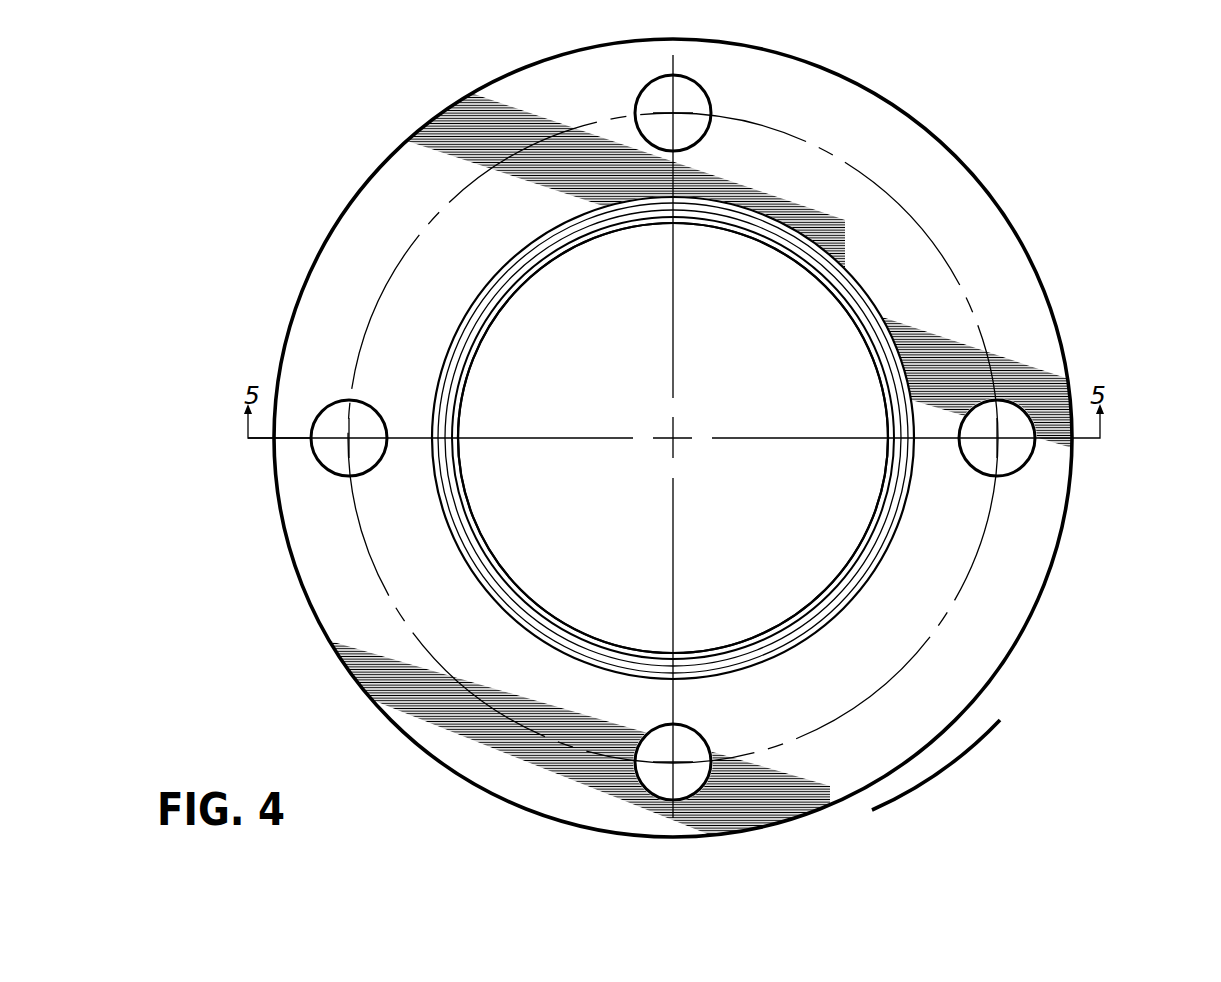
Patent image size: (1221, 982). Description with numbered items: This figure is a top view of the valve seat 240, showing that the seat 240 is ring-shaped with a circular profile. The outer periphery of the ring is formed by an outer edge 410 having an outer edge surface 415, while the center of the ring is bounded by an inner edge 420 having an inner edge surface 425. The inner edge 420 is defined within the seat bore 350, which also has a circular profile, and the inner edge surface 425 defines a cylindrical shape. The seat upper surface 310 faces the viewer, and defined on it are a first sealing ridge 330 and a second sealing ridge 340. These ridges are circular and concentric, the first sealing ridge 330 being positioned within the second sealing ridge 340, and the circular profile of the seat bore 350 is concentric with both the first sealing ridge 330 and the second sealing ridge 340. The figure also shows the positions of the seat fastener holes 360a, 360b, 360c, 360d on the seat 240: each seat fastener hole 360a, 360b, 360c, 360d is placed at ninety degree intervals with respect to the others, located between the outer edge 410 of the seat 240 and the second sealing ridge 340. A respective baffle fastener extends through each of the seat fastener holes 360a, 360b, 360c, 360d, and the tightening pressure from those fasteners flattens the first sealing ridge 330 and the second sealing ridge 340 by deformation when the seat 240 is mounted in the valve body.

The seat 240 is at (1030, 139).
The seat upper surface 310 is at (892, 144).
The first sealing ridge 330 is at (900, 397).
The second sealing ridge 340 is at (893, 342).
The seat bore 350 is at (638, 225).
The seat fastener hole 360a is at (705, 95).
The seat fastener hole 360b is at (1007, 474).
The seat fastener hole 360c is at (703, 790).
The seat fastener hole 360d is at (322, 467).
The outer edge 410 is at (468, 783).
The outer edge surface 415 is at (919, 749).
The inner edge 420 is at (550, 613).
The inner edge surface 425 is at (794, 611).